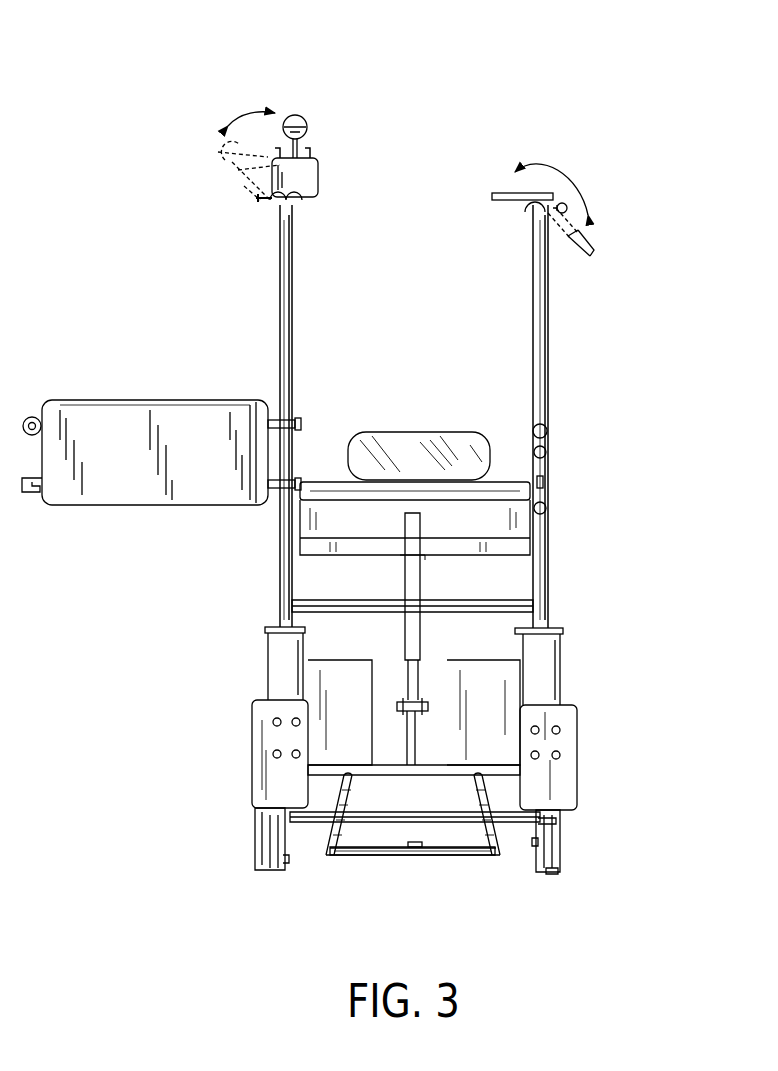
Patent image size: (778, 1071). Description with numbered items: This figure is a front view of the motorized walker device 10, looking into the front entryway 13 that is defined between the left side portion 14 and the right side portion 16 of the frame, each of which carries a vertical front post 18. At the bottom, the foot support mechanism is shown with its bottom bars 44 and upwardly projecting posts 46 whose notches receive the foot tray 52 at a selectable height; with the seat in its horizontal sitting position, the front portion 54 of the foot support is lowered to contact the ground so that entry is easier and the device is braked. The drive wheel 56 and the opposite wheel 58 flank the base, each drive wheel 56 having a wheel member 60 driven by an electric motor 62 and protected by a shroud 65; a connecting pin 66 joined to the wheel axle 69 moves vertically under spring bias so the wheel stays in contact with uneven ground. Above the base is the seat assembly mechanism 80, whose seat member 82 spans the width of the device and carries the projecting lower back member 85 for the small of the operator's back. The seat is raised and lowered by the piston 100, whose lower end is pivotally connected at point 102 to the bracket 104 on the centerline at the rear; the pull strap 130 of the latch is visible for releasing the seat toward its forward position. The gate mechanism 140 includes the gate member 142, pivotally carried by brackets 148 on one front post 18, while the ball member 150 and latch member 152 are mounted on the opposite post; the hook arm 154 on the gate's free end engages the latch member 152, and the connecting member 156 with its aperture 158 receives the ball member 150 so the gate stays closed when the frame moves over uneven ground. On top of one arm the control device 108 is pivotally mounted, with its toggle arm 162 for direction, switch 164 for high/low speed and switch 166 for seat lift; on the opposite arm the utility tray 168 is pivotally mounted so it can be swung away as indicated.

The motorized walker device 10 is at (570, 97).
The front entryway 13 is at (432, 257).
The left side portion 14 is at (554, 297).
The right side portion 16 is at (278, 264).
The vertical front post 18 is at (294, 317).
The bottom bar 44 is at (335, 850).
The upwardly projecting post 46 is at (332, 847).
The foot tray 52 is at (387, 847).
The front portion of the foot support assembly 54 is at (464, 854).
The drive wheel 56 is at (567, 840).
The wheel 58 is at (270, 842).
The wheel member 60 is at (554, 872).
The electric motor 62 is at (547, 654).
The shroud 65 is at (567, 739).
The connecting pin 66 is at (552, 826).
The wheel axle 69 is at (537, 850).
The seat assembly mechanism 80 is at (454, 432).
The seat member 82 is at (320, 484).
The lower back member 85 is at (430, 442).
The piston 100 is at (414, 594).
The pivot point 102 is at (427, 709).
The bracket 104 is at (422, 724).
The control device 108 is at (314, 176).
The pull strap 130 is at (414, 529).
The gate mechanism 140 is at (160, 509).
The gate member 142 is at (220, 422).
The bracket 148 is at (292, 426).
The ball member 150 is at (550, 433).
The latch member 152 is at (548, 483).
The hook arm 154 is at (37, 494).
The connecting member 156 is at (35, 418).
The aperture 158 is at (42, 428).
The toggle arm 162 is at (297, 116).
The switch 164 is at (312, 152).
The switch 166 is at (272, 160).
The utility tray 168 is at (502, 190).